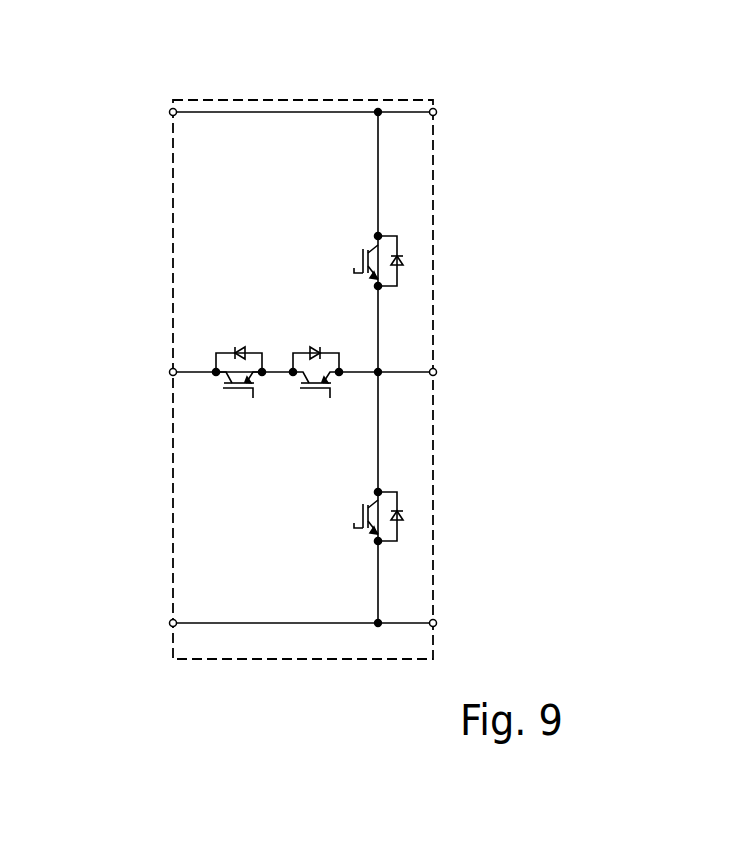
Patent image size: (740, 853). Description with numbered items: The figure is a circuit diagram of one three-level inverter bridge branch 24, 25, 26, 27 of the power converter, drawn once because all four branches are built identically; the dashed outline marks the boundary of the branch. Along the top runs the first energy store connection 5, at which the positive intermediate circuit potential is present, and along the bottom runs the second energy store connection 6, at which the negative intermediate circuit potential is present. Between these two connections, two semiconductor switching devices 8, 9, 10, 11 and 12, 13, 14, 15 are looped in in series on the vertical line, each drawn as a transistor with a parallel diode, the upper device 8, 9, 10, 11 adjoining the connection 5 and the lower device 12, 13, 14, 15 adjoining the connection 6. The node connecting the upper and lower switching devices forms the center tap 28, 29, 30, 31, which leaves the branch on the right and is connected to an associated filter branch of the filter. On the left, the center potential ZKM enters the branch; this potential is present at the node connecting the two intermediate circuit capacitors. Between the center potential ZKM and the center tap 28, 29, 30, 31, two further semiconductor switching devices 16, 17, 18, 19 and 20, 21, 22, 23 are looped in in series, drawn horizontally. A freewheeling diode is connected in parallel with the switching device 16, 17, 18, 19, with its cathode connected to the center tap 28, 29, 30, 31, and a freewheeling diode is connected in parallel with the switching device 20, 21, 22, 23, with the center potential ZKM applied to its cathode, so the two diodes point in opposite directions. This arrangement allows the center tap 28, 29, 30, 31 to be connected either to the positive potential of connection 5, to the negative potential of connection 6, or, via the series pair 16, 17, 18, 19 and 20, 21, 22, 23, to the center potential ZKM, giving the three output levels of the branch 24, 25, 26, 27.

The first energy store connection 5 is at (170, 112).
The second energy store connection 6 is at (170, 623).
The semiconductor switching device 8 is at (469, 261).
The semiconductor switching device 9 is at (469, 261).
The semiconductor switching device 10 is at (469, 261).
The semiconductor switching device 11 is at (405, 261).
The semiconductor switching device 12 is at (483, 517).
The semiconductor switching device 13 is at (483, 517).
The semiconductor switching device 14 is at (483, 517).
The semiconductor switching device 15 is at (405, 506).
The semiconductor switching device 16 is at (277, 328).
The semiconductor switching device 17 is at (277, 328).
The semiconductor switching device 18 is at (277, 328).
The semiconductor switching device 19 is at (318, 348).
The semiconductor switching device 20 is at (257, 428).
The semiconductor switching device 21 is at (257, 428).
The semiconductor switching device 22 is at (257, 428).
The semiconductor switching device 23 is at (241, 389).
The inverter bridge branch 24 is at (320, 332).
The inverter bridge branch 25 is at (320, 332).
The inverter bridge branch 26 is at (320, 332).
The inverter bridge branch 27 is at (350, 99).
The center tap 28 is at (494, 371).
The center tap 29 is at (494, 371).
The center tap 30 is at (494, 371).
The center tap 31 is at (437, 372).
The center potential ZKM is at (170, 372).